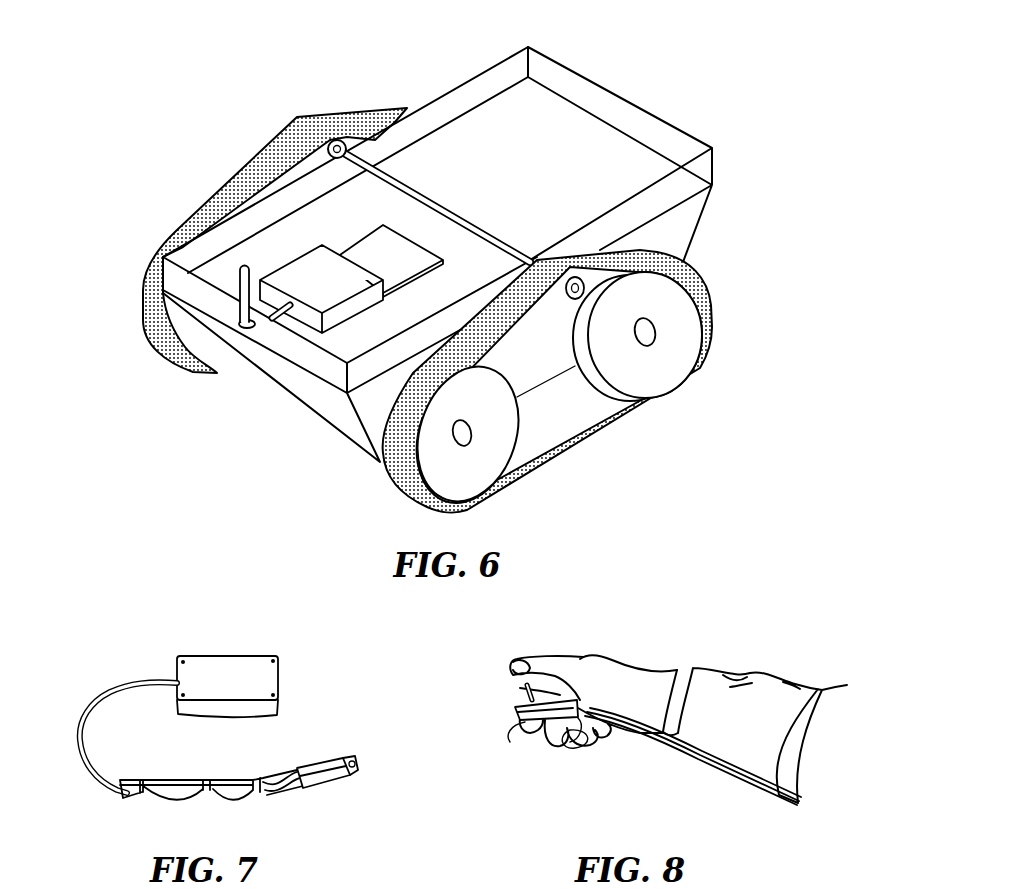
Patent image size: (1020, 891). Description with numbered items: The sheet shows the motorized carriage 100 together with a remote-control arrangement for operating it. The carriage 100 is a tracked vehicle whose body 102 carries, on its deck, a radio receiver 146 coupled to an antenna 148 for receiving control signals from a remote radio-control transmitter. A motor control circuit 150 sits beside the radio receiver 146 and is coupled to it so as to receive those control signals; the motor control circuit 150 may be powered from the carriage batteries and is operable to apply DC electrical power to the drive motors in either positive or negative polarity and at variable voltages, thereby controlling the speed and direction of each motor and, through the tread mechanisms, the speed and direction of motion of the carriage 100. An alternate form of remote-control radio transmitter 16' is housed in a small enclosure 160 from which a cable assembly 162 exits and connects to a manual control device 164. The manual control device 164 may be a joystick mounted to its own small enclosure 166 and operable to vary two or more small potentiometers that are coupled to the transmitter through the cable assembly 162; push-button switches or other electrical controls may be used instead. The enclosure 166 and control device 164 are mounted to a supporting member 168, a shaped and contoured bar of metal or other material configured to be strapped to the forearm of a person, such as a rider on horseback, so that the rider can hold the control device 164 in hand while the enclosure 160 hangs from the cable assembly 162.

In FIG. 6, the motorized carriage 100 is at (472, 274).
In FIG. 6, the vehicle body 102 is at (276, 392).
In FIG. 6, the radio receiver 146 is at (306, 287).
In FIG. 6, the antenna 148 is at (242, 316).
In FIG. 6, the motor control circuit 150 is at (399, 268).
In FIG. 7, the remote-control radio transmitter 16' is at (218, 707).
In FIG. 7, the enclosure 160 is at (230, 655).
In FIG. 7, the cable assembly 162 is at (80, 733).
In FIG. 8, the cable assembly 162 is at (577, 740).
In FIG. 7, the manual control device 164 is at (356, 768).
In FIG. 8, the manual control device 164 is at (525, 688).
In FIG. 7, the enclosure 166 is at (325, 790).
In FIG. 8, the enclosure 166 is at (512, 720).
In FIG. 7, the supporting member 168 is at (177, 781).
In FIG. 8, the supporting member 168 is at (706, 763).